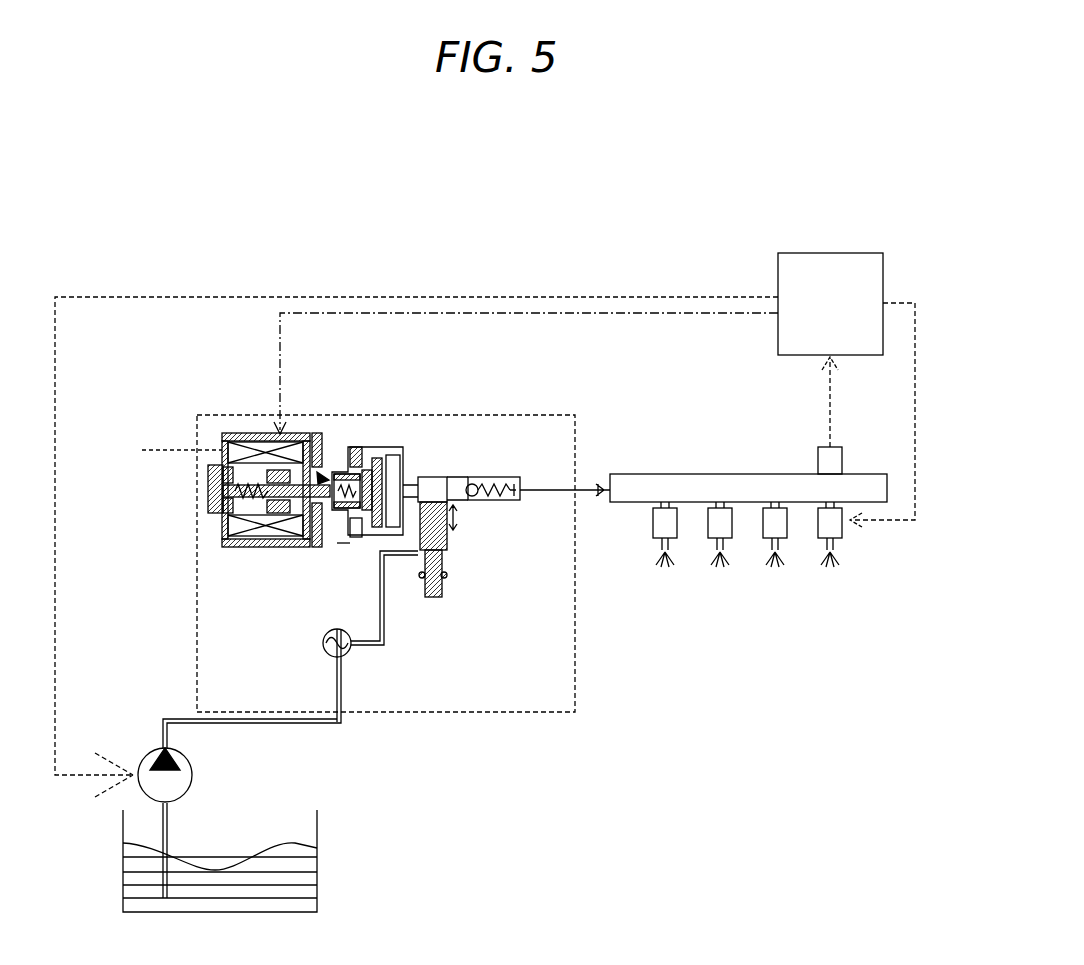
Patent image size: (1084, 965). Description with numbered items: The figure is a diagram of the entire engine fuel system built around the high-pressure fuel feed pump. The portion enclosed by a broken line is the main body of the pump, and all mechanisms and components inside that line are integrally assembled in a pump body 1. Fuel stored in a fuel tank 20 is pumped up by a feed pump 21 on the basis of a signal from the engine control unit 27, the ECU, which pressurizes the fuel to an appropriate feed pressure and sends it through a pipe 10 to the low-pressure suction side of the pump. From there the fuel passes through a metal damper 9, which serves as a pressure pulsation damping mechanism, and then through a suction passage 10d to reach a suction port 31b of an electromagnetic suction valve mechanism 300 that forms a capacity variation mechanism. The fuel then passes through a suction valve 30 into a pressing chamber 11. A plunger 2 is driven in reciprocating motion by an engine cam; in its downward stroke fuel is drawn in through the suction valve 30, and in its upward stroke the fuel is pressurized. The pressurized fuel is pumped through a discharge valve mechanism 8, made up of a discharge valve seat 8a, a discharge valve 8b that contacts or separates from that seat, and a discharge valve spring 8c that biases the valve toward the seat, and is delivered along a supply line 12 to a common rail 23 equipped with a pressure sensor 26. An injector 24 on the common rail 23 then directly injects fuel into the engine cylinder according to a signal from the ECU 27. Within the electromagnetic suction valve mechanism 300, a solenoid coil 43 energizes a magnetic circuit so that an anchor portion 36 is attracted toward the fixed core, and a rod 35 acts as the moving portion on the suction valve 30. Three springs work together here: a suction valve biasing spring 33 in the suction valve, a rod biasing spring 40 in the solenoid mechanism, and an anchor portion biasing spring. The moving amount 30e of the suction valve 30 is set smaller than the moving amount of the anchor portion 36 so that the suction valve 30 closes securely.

The pump body 1 is at (432, 418).
The plunger 2 is at (428, 592).
The discharge valve mechanism 8 is at (509, 563).
The discharge valve seat 8a is at (469, 498).
The discharge valve 8b is at (476, 497).
The discharge valve spring 8c is at (504, 493).
The metal damper 9 is at (350, 655).
The fuel pipe 10 is at (345, 722).
The suction passage 10d is at (338, 544).
The pressing chamber 11 is at (428, 485).
The fuel supply pipe 12 is at (578, 487).
The fuel tank 20 is at (308, 860).
The feed pump 21 is at (143, 778).
The common rail 23 is at (688, 487).
The injector 24 is at (852, 530).
The pressure sensor 26 is at (828, 467).
The engine control unit 27 is at (793, 265).
The suction valve 30 is at (375, 470).
The moving amount of the suction valve 30e is at (358, 470).
The suction port 31b is at (342, 532).
The suction valve biasing spring 33 is at (333, 472).
The rod 35 is at (270, 503).
The anchor portion 36 is at (265, 474).
The rod biasing spring 40 is at (272, 490).
The solenoid coil 43 is at (228, 468).
The electromagnetic suction valve mechanism 300 is at (227, 467).